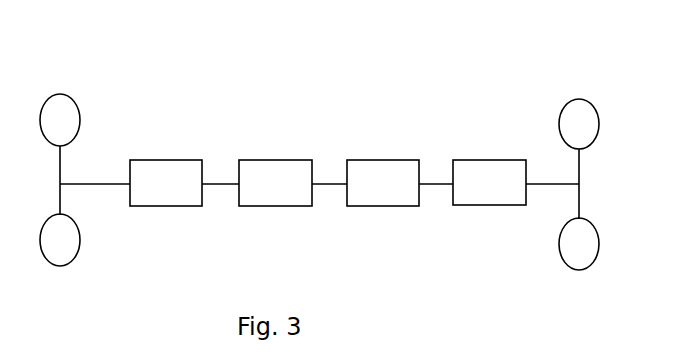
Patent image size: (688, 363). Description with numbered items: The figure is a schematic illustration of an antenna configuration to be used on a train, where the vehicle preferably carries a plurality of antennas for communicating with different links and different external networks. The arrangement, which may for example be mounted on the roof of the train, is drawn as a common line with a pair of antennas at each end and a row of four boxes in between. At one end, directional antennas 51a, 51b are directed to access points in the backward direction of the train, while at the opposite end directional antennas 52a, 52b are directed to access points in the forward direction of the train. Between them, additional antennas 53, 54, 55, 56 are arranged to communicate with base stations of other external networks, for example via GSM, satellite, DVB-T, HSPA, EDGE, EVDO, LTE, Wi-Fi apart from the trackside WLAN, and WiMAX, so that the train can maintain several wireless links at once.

The directional antenna 51a is at (71, 94).
The directional antenna 51b is at (60, 266).
The directional antenna 52a is at (579, 99).
The directional antenna 52b is at (575, 271).
The additional antenna 53 is at (157, 160).
The additional antenna 54 is at (266, 160).
The additional antenna 55 is at (382, 160).
The additional antenna 56 is at (480, 160).